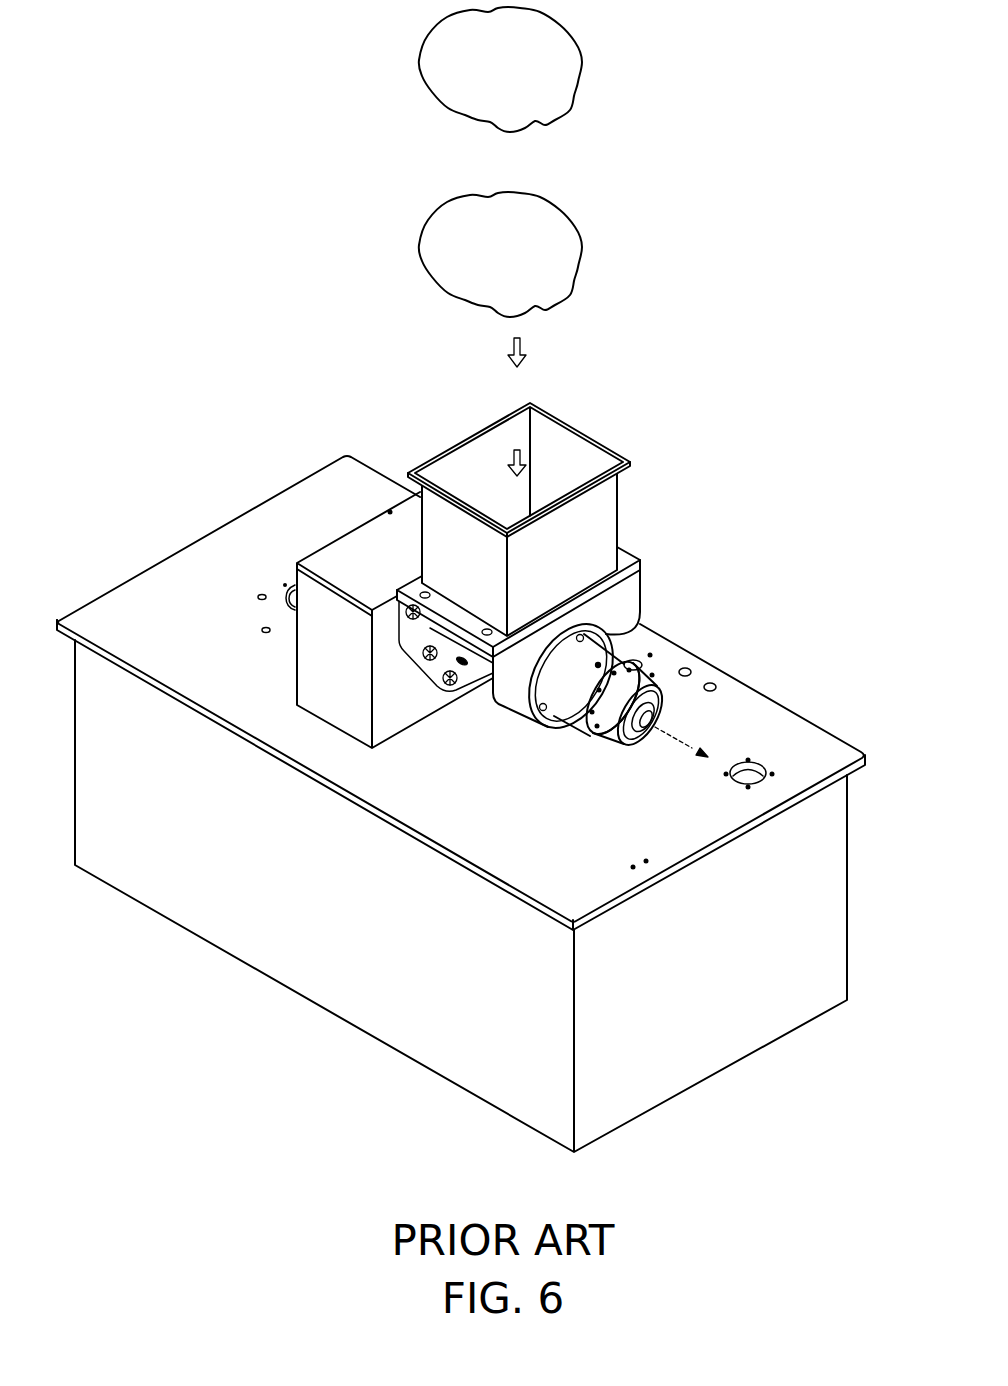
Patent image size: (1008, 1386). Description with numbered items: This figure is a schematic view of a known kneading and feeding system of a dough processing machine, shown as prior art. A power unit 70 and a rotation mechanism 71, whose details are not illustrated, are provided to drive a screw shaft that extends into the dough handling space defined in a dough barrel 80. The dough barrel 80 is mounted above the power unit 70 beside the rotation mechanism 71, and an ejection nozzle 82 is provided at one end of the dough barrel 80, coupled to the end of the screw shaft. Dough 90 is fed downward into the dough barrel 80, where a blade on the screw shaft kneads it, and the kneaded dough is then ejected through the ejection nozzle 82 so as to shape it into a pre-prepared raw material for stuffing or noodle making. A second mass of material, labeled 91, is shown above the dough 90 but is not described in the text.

The power unit 70 is at (160, 540).
The rotation mechanism 71 is at (360, 540).
The dough barrel 80 is at (642, 630).
The ejection nozzle 82 is at (590, 731).
The dough 90 is at (575, 243).
The raw material 91 is at (575, 58).